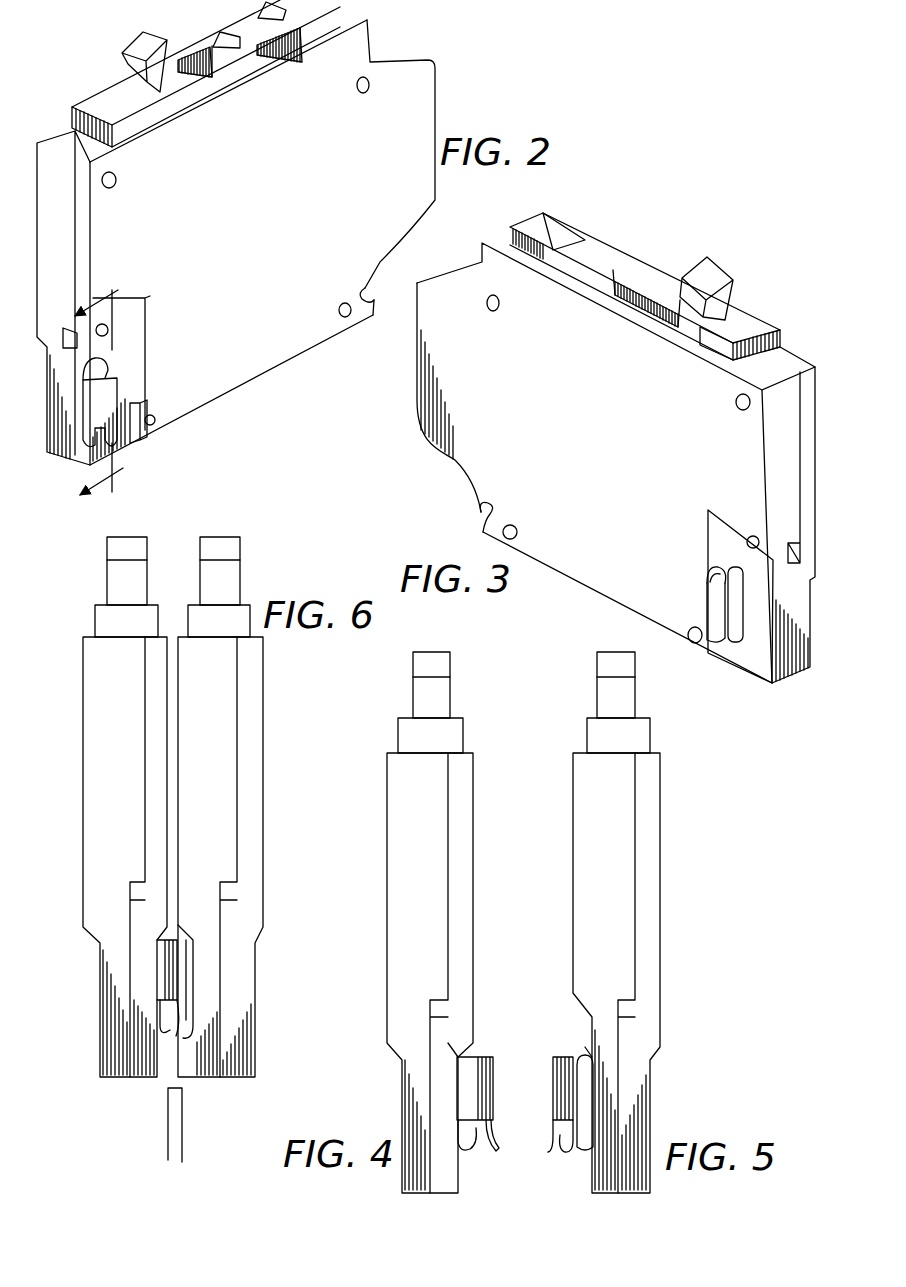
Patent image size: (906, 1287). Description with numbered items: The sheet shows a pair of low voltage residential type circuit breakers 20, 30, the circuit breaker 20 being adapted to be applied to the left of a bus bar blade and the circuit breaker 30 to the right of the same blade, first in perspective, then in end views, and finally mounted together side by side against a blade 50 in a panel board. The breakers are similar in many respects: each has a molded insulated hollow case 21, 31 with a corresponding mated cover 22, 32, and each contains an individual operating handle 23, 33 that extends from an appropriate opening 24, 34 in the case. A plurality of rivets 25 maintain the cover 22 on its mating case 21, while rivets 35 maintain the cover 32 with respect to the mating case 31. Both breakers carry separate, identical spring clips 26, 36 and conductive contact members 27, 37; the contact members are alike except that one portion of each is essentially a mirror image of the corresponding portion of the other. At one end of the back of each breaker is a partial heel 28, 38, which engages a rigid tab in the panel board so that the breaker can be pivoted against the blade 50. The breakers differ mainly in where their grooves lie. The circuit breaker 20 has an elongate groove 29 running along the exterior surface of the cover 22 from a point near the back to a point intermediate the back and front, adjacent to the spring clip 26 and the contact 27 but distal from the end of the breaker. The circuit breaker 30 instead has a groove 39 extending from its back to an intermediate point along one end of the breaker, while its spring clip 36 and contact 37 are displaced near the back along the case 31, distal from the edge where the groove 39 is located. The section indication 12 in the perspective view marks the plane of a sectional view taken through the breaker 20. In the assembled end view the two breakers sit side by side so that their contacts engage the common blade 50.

In FIG. 2, the section line 12 is at (83, 400).
In FIG. 2, the circuit breaker 20 is at (455, 114).
In FIG. 6, the circuit breaker 20 is at (74, 668).
In FIG. 4, the circuit breaker 20 is at (372, 815).
In FIG. 2, the case 21 is at (70, 276).
In FIG. 6, the case 21 is at (87, 793).
In FIG. 4, the case 21 is at (388, 890).
In FIG. 2, the cover 22 is at (400, 227).
In FIG. 6, the cover 22 is at (163, 648).
In FIG. 4, the cover 22 is at (465, 880).
In FIG. 2, the operating handle 23 is at (130, 49).
In FIG. 6, the operating handle 23 is at (138, 537).
In FIG. 4, the operating handle 23 is at (438, 655).
In FIG. 2, the opening 24 is at (182, 55).
In FIG. 2, the rivets 25 is at (368, 92).
In FIG. 2, the spring clip 26 is at (108, 397).
In FIG. 4, the spring clip 26 is at (495, 1103).
In FIG. 2, the contact member 27 is at (107, 363).
In FIG. 4, the contact member 27 is at (468, 1153).
In FIG. 2, the partial heel 28 is at (368, 289).
In FIG. 2, the elongate groove 29 is at (122, 443).
In FIG. 3, the circuit breaker 30 is at (407, 412).
In FIG. 6, the circuit breaker 30 is at (270, 870).
In FIG. 5, the circuit breaker 30 is at (697, 818).
In FIG. 3, the case 31 is at (783, 683).
In FIG. 6, the case 31 is at (228, 800).
In FIG. 5, the case 31 is at (577, 890).
In FIG. 3, the cover 32 is at (808, 487).
In FIG. 6, the cover 32 is at (258, 722).
In FIG. 5, the cover 32 is at (655, 920).
In FIG. 3, the operating handle 33 is at (715, 268).
In FIG. 6, the operating handle 33 is at (226, 537).
In FIG. 5, the operating handle 33 is at (608, 655).
In FIG. 3, the opening 34 is at (665, 272).
In FIG. 3, the rivets 35 is at (496, 311).
In FIG. 3, the spring clip 36 is at (712, 592).
In FIG. 5, the spring clip 36 is at (548, 1092).
In FIG. 3, the contact member 37 is at (723, 565).
In FIG. 5, the contact member 37 is at (573, 1150).
In FIG. 3, the partial heel 38 is at (488, 510).
In FIG. 3, the groove 39 is at (747, 557).
In FIG. 6, the blade 50 is at (177, 1133).